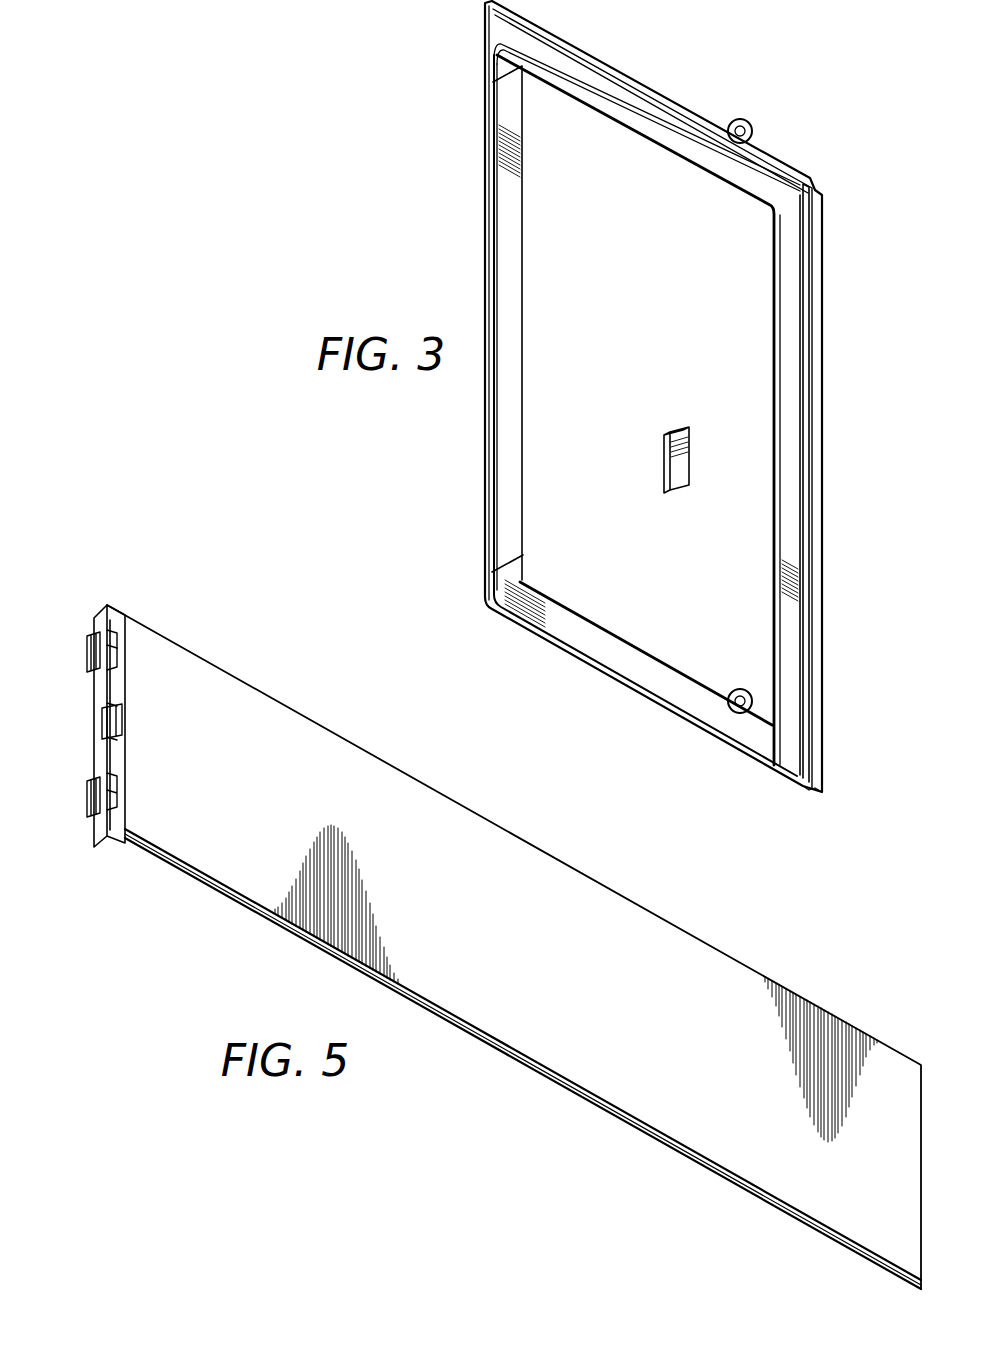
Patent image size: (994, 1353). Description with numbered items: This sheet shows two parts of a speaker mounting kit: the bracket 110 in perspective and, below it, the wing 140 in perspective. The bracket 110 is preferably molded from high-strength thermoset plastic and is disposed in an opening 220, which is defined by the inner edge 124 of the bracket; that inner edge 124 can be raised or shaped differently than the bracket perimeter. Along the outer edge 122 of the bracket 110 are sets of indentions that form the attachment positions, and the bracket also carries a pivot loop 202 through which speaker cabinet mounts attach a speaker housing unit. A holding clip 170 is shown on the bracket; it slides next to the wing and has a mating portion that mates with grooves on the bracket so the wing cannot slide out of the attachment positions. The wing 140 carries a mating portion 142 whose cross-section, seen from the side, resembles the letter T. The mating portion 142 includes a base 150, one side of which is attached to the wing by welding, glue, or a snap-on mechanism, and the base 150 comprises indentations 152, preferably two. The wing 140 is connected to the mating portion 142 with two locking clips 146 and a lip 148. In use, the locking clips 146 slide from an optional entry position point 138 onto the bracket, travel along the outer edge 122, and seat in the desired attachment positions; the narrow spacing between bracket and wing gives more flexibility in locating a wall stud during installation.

In FIG. 3, the bracket 110 is at (487, 232).
In FIG. 3, the outer edge 122 is at (815, 268).
In FIG. 3, the entry position point 138 is at (818, 192).
In FIG. 3, the inner edge 124 is at (760, 197).
In FIG. 3, the opening 220 is at (567, 123).
In FIG. 3, the pivot loop 202 is at (738, 128).
In FIG. 3, the holding clip 170 is at (694, 460).
In FIG. 5, the wing 140 is at (623, 1105).
In FIG. 5, the mating portion 142 is at (118, 612).
In FIG. 5, the locking clips 146 is at (88, 655).
In FIG. 5, the lip 148 is at (102, 718).
In FIG. 5, the base 150 is at (123, 660).
In FIG. 5, the indentations 152 is at (115, 650).